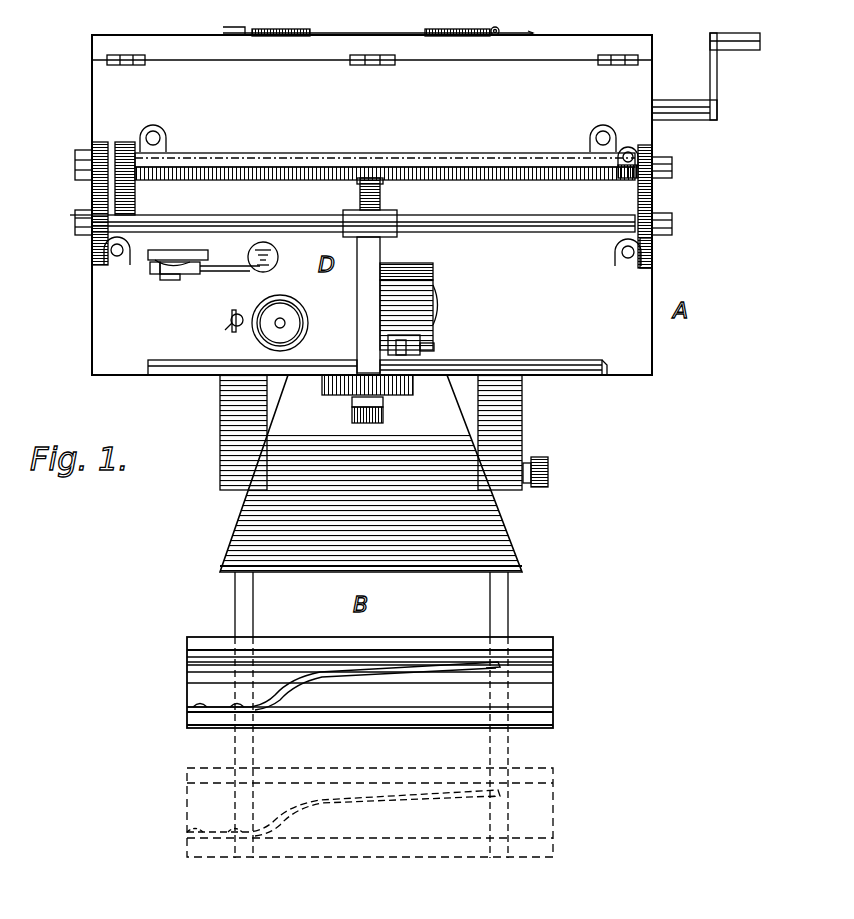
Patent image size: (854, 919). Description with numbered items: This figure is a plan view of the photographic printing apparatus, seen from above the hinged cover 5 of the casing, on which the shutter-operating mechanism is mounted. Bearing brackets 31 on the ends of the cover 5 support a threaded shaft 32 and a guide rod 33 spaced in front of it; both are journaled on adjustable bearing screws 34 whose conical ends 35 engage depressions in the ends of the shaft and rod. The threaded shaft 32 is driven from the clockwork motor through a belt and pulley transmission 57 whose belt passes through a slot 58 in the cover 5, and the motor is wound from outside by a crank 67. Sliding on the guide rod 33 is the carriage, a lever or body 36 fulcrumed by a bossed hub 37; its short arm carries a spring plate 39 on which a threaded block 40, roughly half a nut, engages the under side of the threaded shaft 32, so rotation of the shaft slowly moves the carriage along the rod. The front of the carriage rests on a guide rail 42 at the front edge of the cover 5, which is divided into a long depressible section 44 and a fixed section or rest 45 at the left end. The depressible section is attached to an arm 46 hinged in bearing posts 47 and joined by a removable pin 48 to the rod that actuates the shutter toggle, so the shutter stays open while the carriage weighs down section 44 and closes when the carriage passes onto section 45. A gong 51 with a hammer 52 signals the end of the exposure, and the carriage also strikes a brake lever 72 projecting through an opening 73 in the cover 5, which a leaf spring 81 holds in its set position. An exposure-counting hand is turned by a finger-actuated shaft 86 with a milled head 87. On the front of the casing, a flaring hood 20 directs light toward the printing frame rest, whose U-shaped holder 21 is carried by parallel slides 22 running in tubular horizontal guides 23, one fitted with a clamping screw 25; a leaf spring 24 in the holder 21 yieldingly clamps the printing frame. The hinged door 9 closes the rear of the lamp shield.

The hinged cover 5 is at (640, 108).
The hinged door 9 is at (368, 33).
The crank 67 is at (717, 100).
The threaded shaft 32 is at (536, 181).
The guide rod 33 is at (569, 233).
The bearing brackets 31 is at (98, 204).
The slot 58 is at (112, 188).
The conical ends 35 is at (645, 162).
The adjustable bearing screws 34 is at (75, 162).
The belt and pulley transmission 57 is at (90, 214).
The bossed hub 37 is at (398, 222).
The threaded block 40 is at (381, 190).
The spring plate 39 is at (358, 197).
The lever or body 36 is at (382, 255).
The bearing posts 47 is at (433, 272).
The arm 46 is at (420, 322).
The removable pin 48 is at (430, 345).
The depressible section 44 is at (474, 360).
The guide rail 42 is at (602, 378).
The gong 51 is at (300, 310).
The hammer 52 is at (235, 326).
The brake lever 72 is at (190, 274).
The leaf spring 81 is at (150, 272).
The opening 73 is at (165, 278).
The fixed section or rest 45 is at (176, 378).
The finger-actuated shaft 86 is at (384, 410).
The milled head 87 is at (378, 425).
The tubular horizontal guides 23 is at (225, 490).
The hood or concentrator 20 is at (452, 436).
The clamping screw 25 is at (548, 468).
The slides 22 is at (235, 600).
The holder 21 is at (545, 640).
The leaf spring 24 is at (405, 683).